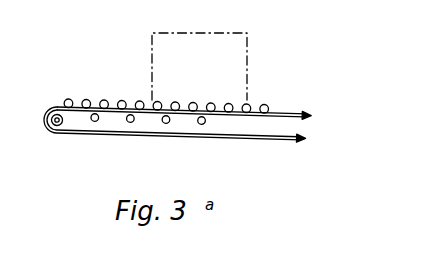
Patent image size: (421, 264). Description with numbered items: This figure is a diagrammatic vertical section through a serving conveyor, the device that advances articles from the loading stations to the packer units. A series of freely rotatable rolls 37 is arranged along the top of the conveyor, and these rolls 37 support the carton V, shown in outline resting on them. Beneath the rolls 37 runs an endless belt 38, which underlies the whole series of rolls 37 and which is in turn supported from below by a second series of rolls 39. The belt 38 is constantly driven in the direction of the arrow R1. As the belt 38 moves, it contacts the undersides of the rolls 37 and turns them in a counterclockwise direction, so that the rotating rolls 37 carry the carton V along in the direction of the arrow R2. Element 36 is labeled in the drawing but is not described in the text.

The conveyor belt 36 is at (272, 94).
The freely rotatable rolls 37 is at (120, 99).
The endless belt 38 is at (287, 110).
The second series of rolls 39 is at (166, 121).
The direction of belt drive R1 is at (118, 148).
The direction of carton advance R2 is at (188, 64).
The carton V is at (238, 52).